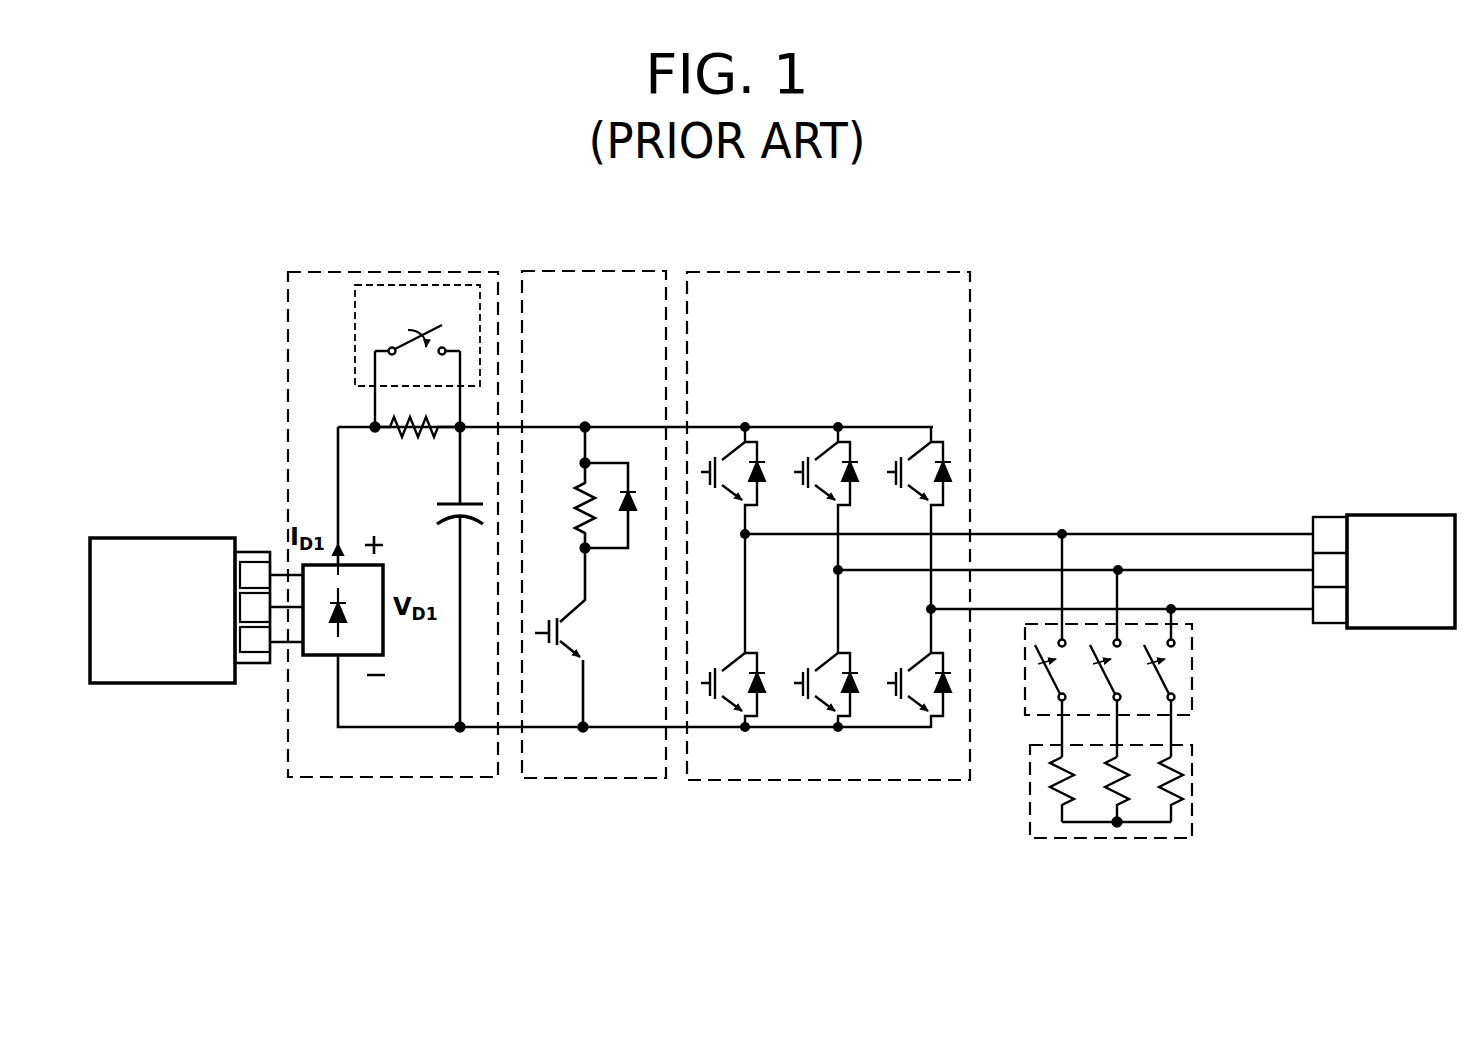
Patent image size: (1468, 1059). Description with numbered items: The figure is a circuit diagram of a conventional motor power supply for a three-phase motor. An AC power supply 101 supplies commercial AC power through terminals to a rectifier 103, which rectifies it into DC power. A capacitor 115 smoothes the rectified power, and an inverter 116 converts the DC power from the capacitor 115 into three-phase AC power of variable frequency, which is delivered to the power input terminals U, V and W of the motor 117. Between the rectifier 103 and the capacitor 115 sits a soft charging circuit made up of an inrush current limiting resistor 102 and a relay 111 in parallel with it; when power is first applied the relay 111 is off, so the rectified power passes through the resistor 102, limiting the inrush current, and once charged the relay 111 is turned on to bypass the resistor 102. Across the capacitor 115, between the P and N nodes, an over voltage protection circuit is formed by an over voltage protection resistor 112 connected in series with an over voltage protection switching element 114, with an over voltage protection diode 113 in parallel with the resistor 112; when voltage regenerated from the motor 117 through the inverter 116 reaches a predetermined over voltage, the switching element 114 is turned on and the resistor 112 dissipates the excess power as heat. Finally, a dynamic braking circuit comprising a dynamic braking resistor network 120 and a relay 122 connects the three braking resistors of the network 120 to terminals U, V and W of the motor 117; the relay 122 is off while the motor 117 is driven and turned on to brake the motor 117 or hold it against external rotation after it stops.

The AC power supply 101 is at (143, 538).
The inrush current limiting resistor 102 is at (432, 417).
The rectifier 103 is at (318, 657).
The relay 111 is at (367, 280).
The over voltage protection resistor 112 is at (576, 483).
The over voltage protection diode 113 is at (633, 490).
The over voltage protection switching element 114 is at (566, 650).
The capacitor 115 is at (452, 502).
The inverter 116 is at (863, 280).
The motor 117 is at (1413, 514).
The dynamic braking resistor network 120 is at (1192, 790).
The relay 122 is at (1192, 673).